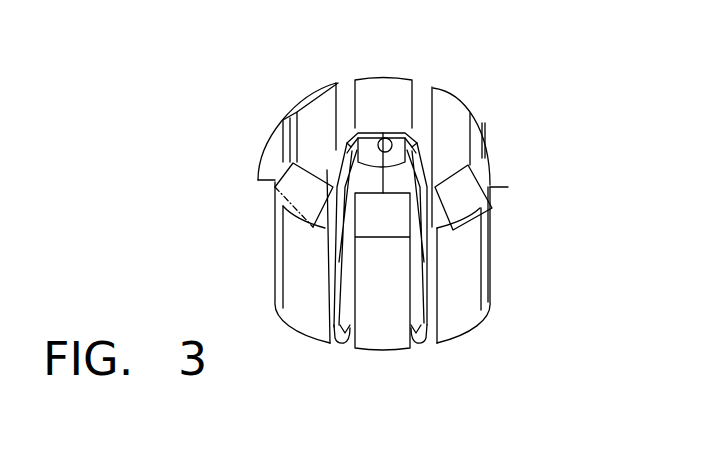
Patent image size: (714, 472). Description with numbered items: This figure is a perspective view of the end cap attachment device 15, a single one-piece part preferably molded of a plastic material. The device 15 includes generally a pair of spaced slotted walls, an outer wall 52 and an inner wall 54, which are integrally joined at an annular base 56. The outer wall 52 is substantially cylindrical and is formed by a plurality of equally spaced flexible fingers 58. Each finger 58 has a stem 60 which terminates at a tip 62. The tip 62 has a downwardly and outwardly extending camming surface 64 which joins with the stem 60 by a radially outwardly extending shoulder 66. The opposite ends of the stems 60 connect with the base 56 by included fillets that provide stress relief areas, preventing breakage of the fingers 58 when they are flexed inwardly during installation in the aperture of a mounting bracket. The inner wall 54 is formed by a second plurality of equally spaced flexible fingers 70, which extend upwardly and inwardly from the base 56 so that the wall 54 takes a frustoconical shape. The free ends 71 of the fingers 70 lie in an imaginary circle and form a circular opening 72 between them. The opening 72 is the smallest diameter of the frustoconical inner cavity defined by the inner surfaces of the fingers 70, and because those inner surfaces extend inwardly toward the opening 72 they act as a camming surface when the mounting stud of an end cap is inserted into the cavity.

The end cap attachment device 15 is at (488, 258).
The outer wall 52 is at (280, 255).
The inner wall 54 is at (340, 160).
The annular base 56 is at (342, 342).
The flexible fingers 58 is at (460, 293).
The stem 60 is at (307, 297).
The tip 62 is at (385, 78).
The camming surface 64 is at (490, 188).
The shoulder 66 is at (258, 182).
The flexible fingers 70 is at (418, 147).
The free ends 71 is at (380, 132).
The circular opening 72 is at (389, 136).